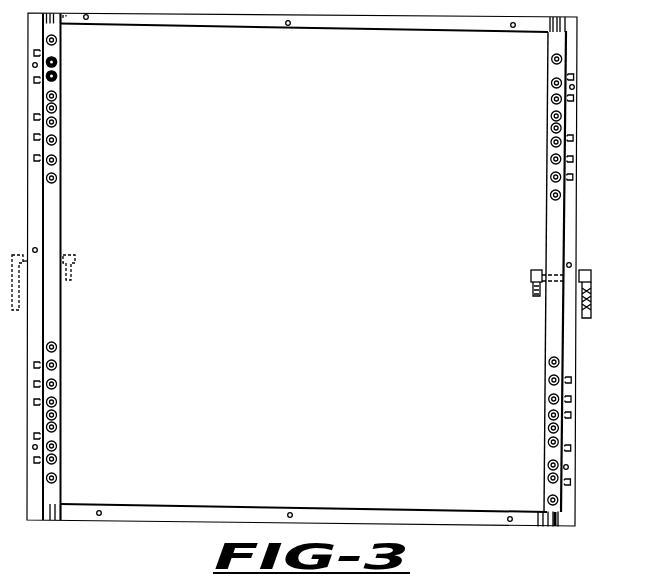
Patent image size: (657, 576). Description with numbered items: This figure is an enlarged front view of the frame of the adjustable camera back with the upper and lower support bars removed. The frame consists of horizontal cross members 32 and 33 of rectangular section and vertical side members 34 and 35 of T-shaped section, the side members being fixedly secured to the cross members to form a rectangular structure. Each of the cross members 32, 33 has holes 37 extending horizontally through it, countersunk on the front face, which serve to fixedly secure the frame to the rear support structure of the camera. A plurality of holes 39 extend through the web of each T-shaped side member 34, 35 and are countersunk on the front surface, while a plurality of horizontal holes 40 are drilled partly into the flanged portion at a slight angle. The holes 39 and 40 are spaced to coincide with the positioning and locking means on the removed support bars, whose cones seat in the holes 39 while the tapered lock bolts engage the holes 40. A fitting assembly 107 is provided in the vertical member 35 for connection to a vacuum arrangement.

The horizontal cross member 32 is at (173, 22).
The horizontal cross member 33 is at (249, 515).
The vertical side member 34 is at (35, 233).
The vertical side member 35 is at (568, 215).
The holes 37 is at (288, 26).
The holes 39 is at (57, 97).
The horizontal holes 40 is at (38, 136).
The fitting assembly 107 is at (531, 277).